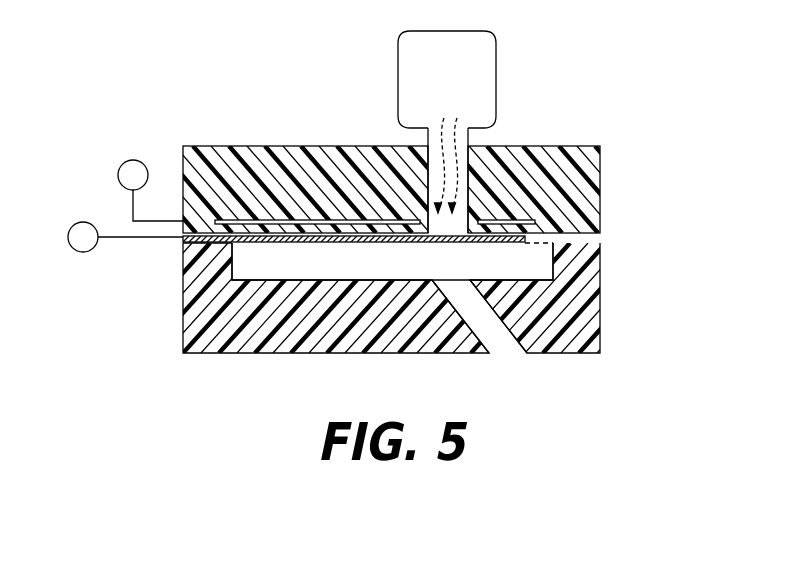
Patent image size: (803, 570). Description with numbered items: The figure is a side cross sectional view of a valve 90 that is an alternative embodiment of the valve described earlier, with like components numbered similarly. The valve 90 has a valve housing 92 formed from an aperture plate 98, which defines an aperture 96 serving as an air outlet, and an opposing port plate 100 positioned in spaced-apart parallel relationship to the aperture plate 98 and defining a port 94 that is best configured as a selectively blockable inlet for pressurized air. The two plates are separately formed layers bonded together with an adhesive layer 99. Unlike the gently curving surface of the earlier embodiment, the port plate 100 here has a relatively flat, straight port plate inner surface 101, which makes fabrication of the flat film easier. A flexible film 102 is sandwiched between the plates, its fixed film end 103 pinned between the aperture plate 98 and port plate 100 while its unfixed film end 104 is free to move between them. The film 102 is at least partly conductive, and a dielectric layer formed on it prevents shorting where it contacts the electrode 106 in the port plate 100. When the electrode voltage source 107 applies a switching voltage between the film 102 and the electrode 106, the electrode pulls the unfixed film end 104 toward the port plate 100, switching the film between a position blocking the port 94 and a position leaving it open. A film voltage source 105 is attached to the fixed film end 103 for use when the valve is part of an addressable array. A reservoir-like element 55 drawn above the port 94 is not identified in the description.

The valve 90 is at (325, 125).
The valve housing 92 is at (204, 138).
The port plate 100 is at (565, 146).
The electrode 106 is at (222, 222).
The sample reservoir 55 is at (467, 91).
The port 94 is at (461, 145).
The electrode voltage source 107 is at (118, 175).
The film voltage source 105 is at (68, 237).
The flexible film 102 is at (383, 254).
The aperture plate 98 is at (601, 340).
The fixed film end 103 is at (392, 261).
The aperture 96 is at (505, 359).
The unfixed film end 104 is at (522, 243).
The adhesive layer 99 is at (601, 237).
The port plate inner surface 101 is at (205, 244).